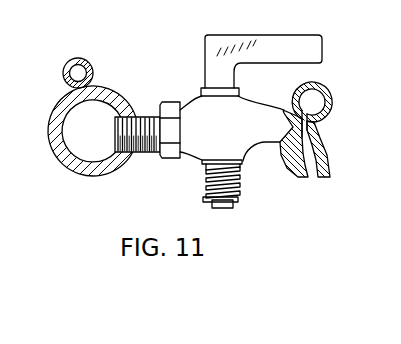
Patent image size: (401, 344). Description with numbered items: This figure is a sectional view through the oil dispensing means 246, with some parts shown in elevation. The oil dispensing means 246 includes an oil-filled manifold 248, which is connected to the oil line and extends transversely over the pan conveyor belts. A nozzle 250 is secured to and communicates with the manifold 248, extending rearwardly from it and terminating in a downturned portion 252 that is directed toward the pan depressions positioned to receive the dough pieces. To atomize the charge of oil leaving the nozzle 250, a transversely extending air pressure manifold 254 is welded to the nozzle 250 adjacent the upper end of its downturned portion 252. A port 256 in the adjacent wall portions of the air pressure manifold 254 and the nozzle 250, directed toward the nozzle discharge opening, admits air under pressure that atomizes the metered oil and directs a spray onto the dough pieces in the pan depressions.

The oil dispensing means 246 is at (138, 97).
The manifold 248 is at (113, 173).
The nozzle 250 is at (256, 103).
The downturned portion 252 is at (330, 163).
The air pressure manifold 254 is at (320, 88).
The port 256 is at (307, 116).